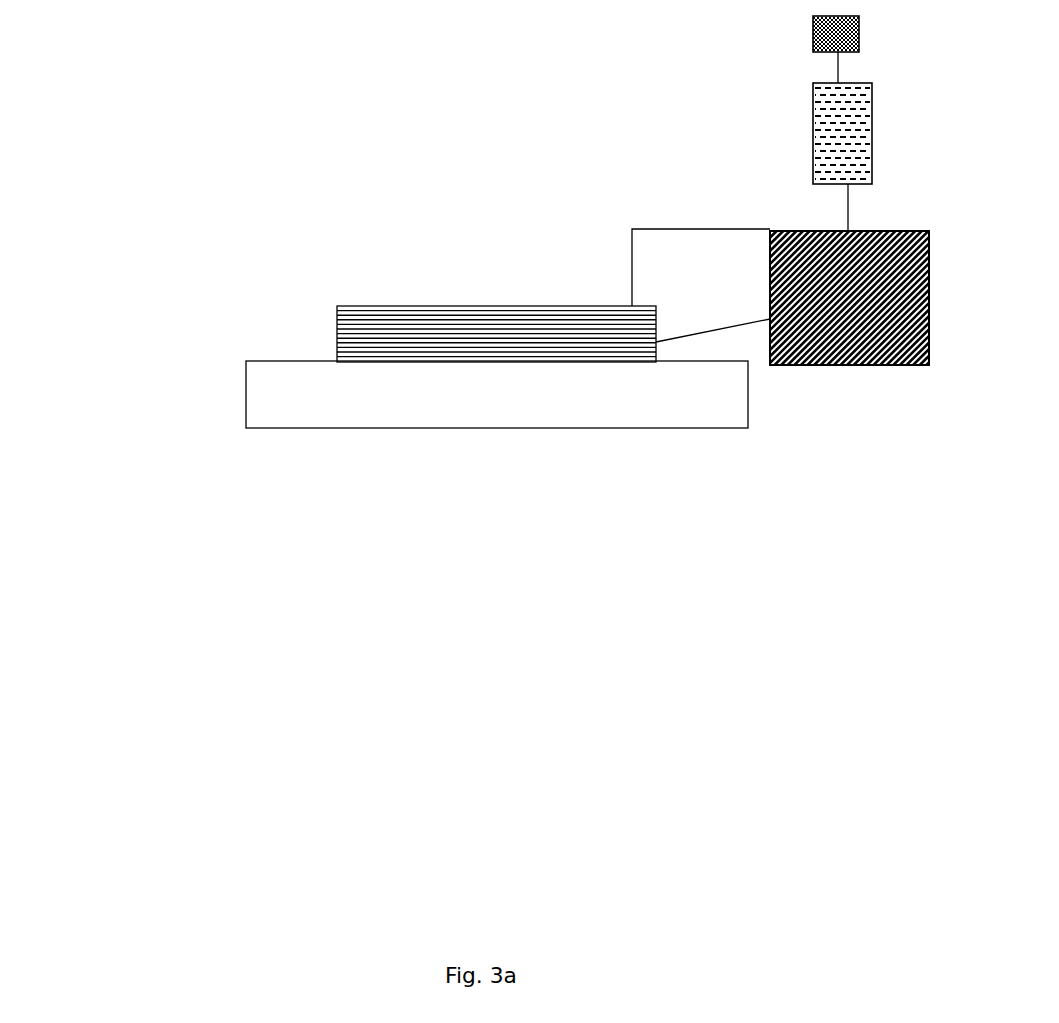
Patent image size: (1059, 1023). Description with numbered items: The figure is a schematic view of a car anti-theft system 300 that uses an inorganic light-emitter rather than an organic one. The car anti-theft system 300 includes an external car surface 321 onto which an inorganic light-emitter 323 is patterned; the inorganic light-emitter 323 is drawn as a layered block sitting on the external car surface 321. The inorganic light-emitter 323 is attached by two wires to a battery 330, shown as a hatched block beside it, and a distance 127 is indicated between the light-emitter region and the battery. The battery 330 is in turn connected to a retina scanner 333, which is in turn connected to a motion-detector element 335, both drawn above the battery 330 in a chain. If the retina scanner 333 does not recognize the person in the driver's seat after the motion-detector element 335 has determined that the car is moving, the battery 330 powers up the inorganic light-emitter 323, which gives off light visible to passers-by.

The car anti-theft system 300 is at (177, 457).
The external car surface 321 is at (221, 394).
The inorganic light-emitter 323 is at (301, 339).
The gap / separation distance 127 is at (693, 242).
The battery 330 is at (849, 386).
The retina scanner 333 is at (792, 128).
The motion-detector element 335 is at (781, 41).